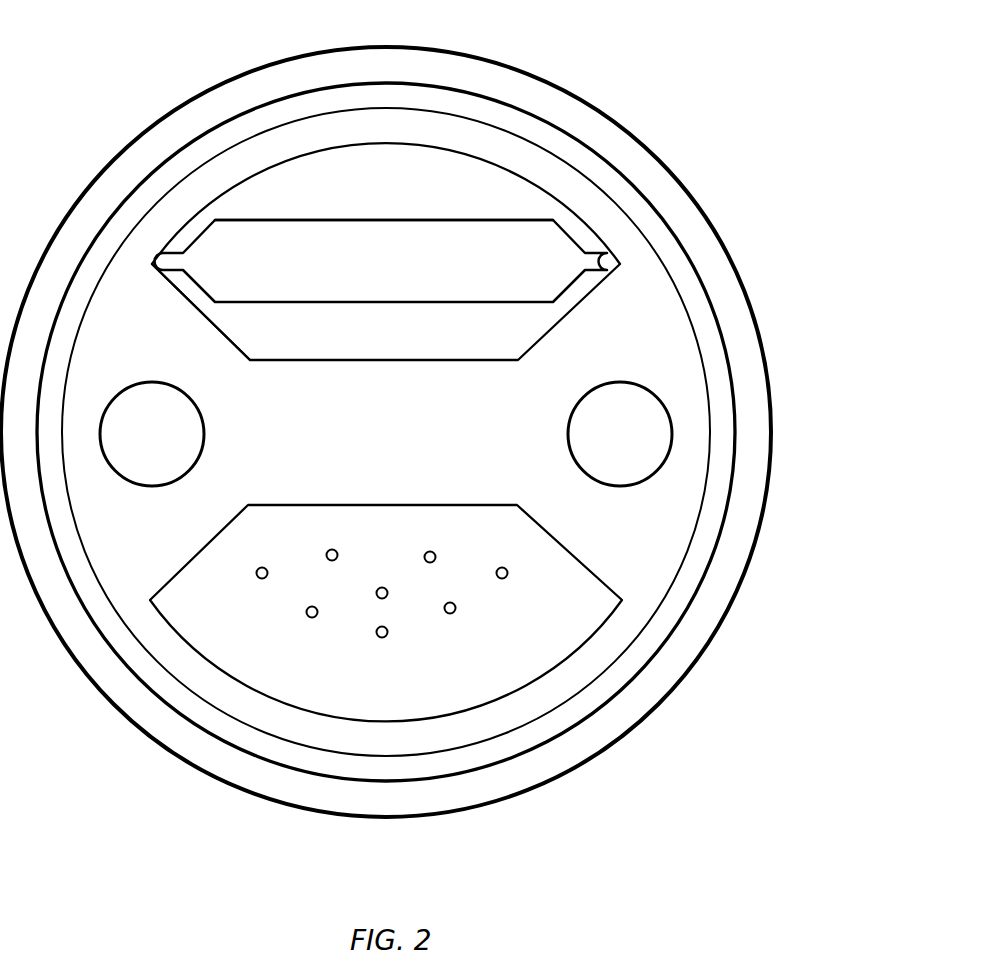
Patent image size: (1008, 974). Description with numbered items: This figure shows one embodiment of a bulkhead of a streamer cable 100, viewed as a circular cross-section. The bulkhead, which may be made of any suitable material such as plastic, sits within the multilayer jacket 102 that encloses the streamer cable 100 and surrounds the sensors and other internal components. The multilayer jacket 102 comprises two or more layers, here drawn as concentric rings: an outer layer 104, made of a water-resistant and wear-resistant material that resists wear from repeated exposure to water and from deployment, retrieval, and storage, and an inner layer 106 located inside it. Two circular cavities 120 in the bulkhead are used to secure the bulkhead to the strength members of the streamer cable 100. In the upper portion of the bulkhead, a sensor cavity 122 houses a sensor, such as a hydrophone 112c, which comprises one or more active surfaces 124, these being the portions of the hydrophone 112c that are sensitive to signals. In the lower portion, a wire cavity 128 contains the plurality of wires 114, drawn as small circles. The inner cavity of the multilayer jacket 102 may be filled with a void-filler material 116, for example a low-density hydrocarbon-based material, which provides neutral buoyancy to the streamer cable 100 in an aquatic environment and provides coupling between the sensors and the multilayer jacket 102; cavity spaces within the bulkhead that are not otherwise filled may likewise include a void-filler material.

The streamer cable 100 is at (592, 52).
The multilayer jacket 102 is at (425, 48).
The outer layer 104 is at (625, 130).
The inner layer 106 is at (635, 186).
The hydrophone 112c is at (268, 210).
The wires 114 is at (432, 542).
The void-filler material 116 is at (378, 165).
The cavities 120 is at (195, 402).
The sensor cavity 122 is at (465, 212).
The active surfaces 124 is at (358, 218).
The wire cavity 128 is at (558, 577).